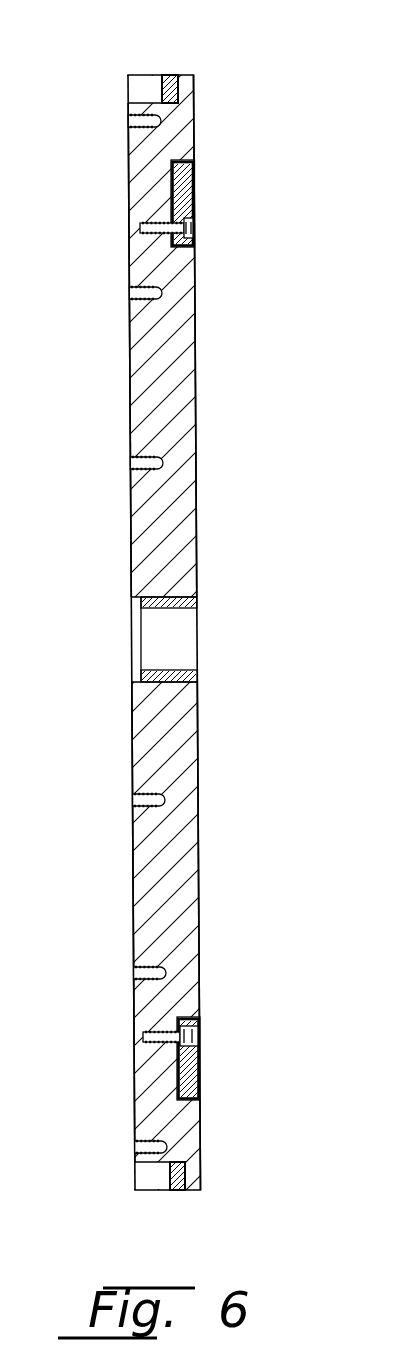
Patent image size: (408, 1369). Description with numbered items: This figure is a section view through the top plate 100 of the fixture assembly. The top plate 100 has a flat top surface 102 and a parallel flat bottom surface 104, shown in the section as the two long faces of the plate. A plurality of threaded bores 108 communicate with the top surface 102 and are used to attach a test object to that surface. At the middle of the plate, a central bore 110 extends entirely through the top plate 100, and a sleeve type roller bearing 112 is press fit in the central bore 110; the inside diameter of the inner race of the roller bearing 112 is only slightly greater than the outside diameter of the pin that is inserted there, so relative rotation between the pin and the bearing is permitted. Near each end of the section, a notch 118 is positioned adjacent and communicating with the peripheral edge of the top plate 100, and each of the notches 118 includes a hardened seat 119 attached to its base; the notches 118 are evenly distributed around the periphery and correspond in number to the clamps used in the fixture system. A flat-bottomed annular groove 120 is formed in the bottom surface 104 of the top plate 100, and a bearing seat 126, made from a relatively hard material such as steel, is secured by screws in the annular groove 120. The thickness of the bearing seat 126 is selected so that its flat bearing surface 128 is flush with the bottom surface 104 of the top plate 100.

The top plate 100 is at (130, 507).
The top surface 102 is at (130, 340).
The bottom surface 104 is at (196, 345).
The threaded bores 108 is at (138, 800).
The central bore 110 is at (172, 609).
The sleeve type roller bearing 112 is at (190, 670).
The notches 118 is at (137, 103).
The hardened seat 119 is at (170, 76).
The annular groove 120 is at (193, 224).
The bearing seat 126 is at (187, 171).
The bearing surface 128 is at (193, 191).